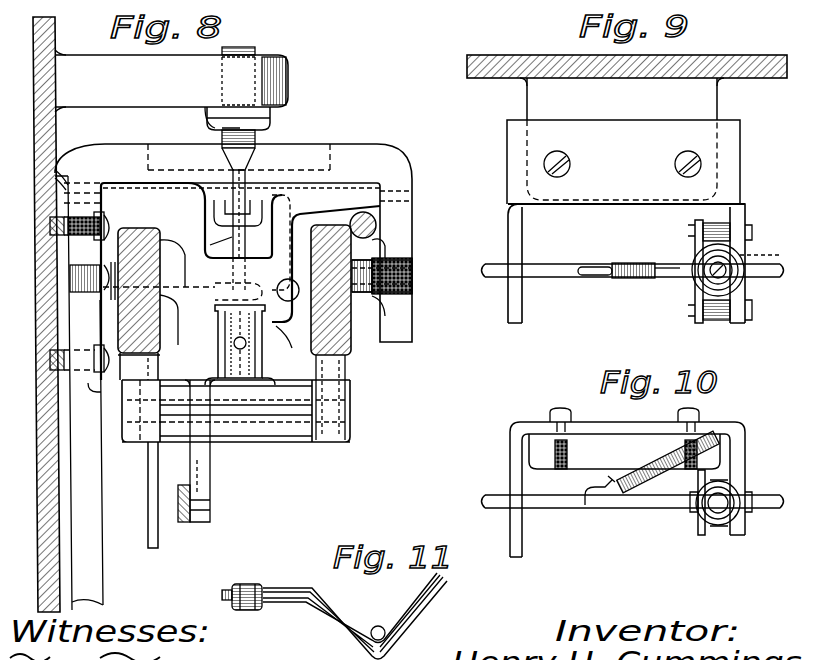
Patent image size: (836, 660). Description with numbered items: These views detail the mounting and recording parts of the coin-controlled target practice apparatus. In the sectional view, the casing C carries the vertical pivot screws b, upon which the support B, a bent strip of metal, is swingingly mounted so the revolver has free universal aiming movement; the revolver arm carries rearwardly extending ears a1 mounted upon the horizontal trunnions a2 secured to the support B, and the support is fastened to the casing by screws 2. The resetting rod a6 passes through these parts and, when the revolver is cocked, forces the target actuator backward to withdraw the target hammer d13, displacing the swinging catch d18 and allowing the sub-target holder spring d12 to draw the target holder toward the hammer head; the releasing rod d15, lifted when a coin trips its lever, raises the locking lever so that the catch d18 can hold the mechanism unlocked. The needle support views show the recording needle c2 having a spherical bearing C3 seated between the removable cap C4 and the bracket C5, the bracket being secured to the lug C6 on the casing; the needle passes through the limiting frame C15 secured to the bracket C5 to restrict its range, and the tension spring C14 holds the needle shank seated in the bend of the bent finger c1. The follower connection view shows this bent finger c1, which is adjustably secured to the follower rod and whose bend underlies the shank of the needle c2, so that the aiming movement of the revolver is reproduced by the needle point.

In FIG. 8, the casing C is at (33, 82).
In FIG. 9, the casing C is at (722, 60).
In FIG. 8, the fastening screws 2 is at (48, 186).
In FIG. 8, the vertical pivot screws b is at (256, 128).
In FIG. 8, the support B is at (384, 162).
In FIG. 8, the swinging catch d18 is at (240, 252).
In FIG. 8, the target hammer d13 is at (140, 290).
In FIG. 8, the sub-target holder spring d12 is at (255, 332).
In FIG. 8, the ears a1 is at (157, 372).
In FIG. 8, the horizontal trunnions a2 is at (236, 480).
In FIG. 8, the resetting rod a6 is at (184, 522).
In FIG. 8, the releasing rod d15 is at (150, 490).
In FIG. 9, the lug C6 is at (623, 141).
In FIG. 10, the lug C6 is at (624, 445).
In FIG. 9, the bracket C5 is at (736, 216).
In FIG. 10, the bracket C5 is at (746, 466).
In FIG. 9, the limiting frame C15 is at (633, 248).
In FIG. 10, the limiting frame C15 is at (525, 522).
In FIG. 9, the tension spring C14 is at (652, 280).
In FIG. 10, the tension spring C14 is at (645, 485).
In FIG. 9, the removable cap C4 is at (696, 250).
In FIG. 10, the removable cap C4 is at (700, 522).
In FIG. 9, the spherical bearing C3 is at (738, 257).
In FIG. 10, the spherical bearing C3 is at (716, 526).
In FIG. 11, the bent finger c1 is at (420, 614).
In FIG. 11, the recording needle c2 is at (307, 611).